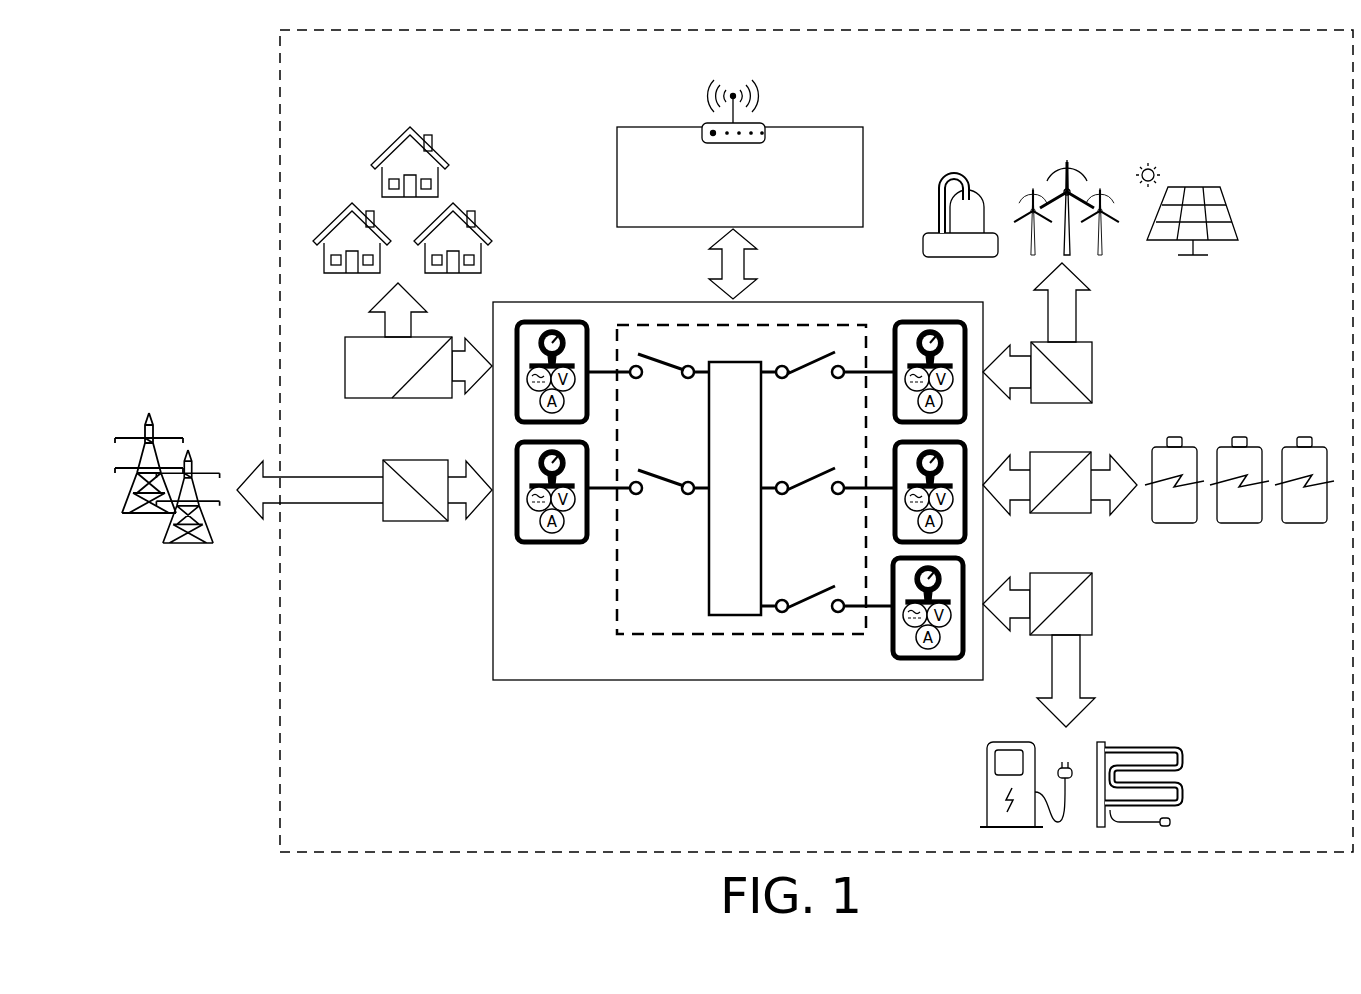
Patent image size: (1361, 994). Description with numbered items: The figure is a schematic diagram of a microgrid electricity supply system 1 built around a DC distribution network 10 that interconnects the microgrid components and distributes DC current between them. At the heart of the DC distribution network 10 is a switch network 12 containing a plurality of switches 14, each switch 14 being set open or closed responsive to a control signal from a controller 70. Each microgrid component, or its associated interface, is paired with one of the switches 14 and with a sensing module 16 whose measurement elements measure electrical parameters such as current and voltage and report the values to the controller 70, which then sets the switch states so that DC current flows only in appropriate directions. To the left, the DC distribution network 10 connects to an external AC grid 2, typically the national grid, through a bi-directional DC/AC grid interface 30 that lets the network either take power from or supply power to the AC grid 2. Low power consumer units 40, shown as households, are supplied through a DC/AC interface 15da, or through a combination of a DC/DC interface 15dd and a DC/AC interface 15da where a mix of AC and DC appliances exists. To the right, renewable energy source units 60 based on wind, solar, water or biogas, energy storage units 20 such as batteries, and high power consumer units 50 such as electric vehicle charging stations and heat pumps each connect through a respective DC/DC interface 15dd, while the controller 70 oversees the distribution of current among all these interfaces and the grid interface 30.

The microgrid electricity supply system 1 is at (311, 77).
The AC grid 2 is at (187, 560).
The DC distribution network 10 is at (522, 680).
The switch network 12 is at (752, 634).
The switches 14 is at (806, 355).
The DC/DC interface 15dd is at (1092, 352).
The DC/AC interface 15da is at (345, 373).
The sensing module 16 is at (552, 322).
The energy storage units 20 is at (1272, 440).
The DC/AC grid interface 30 is at (415, 521).
The low power consumer units 40 is at (367, 190).
The high power consumer units 50 is at (1190, 770).
The renewable energy source units 60 is at (1013, 163).
The controller 70 is at (655, 127).